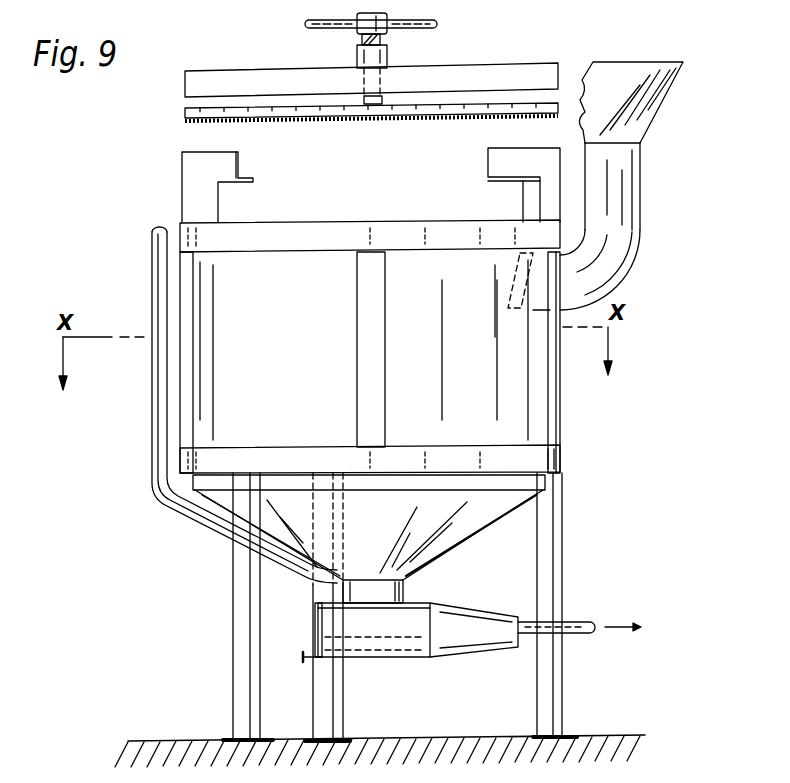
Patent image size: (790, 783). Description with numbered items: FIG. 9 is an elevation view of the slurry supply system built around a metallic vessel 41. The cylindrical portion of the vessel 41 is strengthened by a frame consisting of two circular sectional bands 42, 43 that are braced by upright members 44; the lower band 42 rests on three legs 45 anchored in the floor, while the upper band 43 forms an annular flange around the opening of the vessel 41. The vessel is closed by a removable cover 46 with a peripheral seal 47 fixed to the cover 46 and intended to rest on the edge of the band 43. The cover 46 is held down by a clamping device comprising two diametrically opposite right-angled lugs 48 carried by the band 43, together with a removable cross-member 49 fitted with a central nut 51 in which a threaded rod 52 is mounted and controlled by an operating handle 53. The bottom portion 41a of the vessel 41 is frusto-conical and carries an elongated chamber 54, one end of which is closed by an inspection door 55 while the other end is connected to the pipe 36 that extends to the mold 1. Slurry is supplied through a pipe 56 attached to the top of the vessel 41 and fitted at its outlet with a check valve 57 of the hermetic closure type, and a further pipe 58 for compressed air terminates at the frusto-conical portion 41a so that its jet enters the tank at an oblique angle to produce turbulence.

The mold 1 is at (630, 625).
The pipe 36 is at (581, 637).
The metallic vessel 41 is at (227, 397).
The bottom portion 41a is at (448, 551).
The circular sectional band 42 is at (558, 452).
The circular sectional band 43 is at (391, 230).
The upright members 44 is at (386, 345).
The legs 45 is at (240, 623).
The removable cover 46 is at (185, 113).
The peripheral seal 47 is at (184, 125).
The right-angled lugs 48 is at (181, 193).
The removable cross-member 49 is at (259, 70).
The central nut 51 is at (388, 60).
The threaded rod 52 is at (362, 39).
The operating handle 53 is at (440, 24).
The chamber 54 is at (388, 658).
The inspection door 55 is at (316, 628).
The pipe 56 is at (641, 207).
The check valve 57 is at (518, 270).
The pipe 58 is at (186, 512).